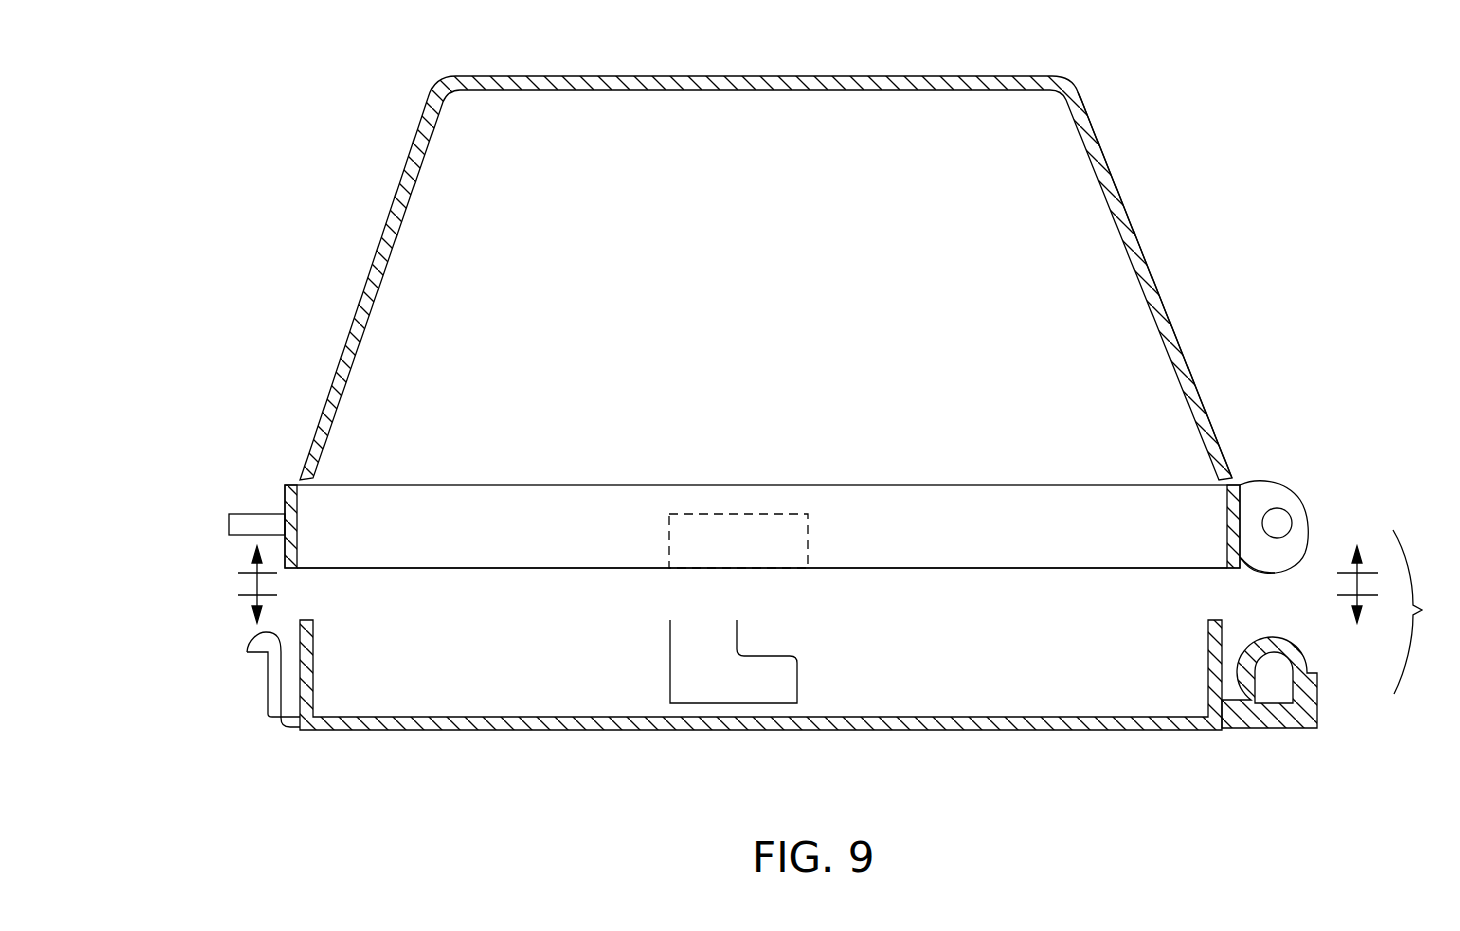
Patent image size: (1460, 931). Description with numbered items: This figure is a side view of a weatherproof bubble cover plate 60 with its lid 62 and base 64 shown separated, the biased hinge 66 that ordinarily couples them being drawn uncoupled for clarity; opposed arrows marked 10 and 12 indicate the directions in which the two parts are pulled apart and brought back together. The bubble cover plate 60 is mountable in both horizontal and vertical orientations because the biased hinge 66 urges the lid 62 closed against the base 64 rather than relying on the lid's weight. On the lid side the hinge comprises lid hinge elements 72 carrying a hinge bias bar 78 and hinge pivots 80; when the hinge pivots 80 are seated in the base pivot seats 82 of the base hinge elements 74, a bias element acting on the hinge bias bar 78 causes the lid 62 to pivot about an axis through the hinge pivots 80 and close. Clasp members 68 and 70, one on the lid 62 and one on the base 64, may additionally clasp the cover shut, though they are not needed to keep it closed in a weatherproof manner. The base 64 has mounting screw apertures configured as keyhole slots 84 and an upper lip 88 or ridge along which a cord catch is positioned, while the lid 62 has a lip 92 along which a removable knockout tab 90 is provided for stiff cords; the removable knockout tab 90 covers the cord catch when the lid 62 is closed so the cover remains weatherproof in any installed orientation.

The downward direction 10 is at (798, 588).
The upward direction 12 is at (785, 582).
The bubble cover plate 60 is at (378, 153).
The lid 62 is at (1135, 233).
The base 64 is at (910, 723).
The biased hinge 66 is at (1425, 612).
The clasp member 68 is at (262, 522).
The clasp member 70 is at (270, 685).
The lid hinge elements 72 is at (1333, 515).
The base hinge elements 74 is at (1342, 712).
The hinge bias bar 78 is at (1236, 556).
The hinge pivots 80 is at (1277, 523).
The base pivot seats 82 is at (1273, 682).
The keyhole slots 84 is at (727, 694).
The upper lip 88 is at (518, 622).
The removable knockout tab 90 is at (768, 554).
The lip 92 is at (1013, 568).